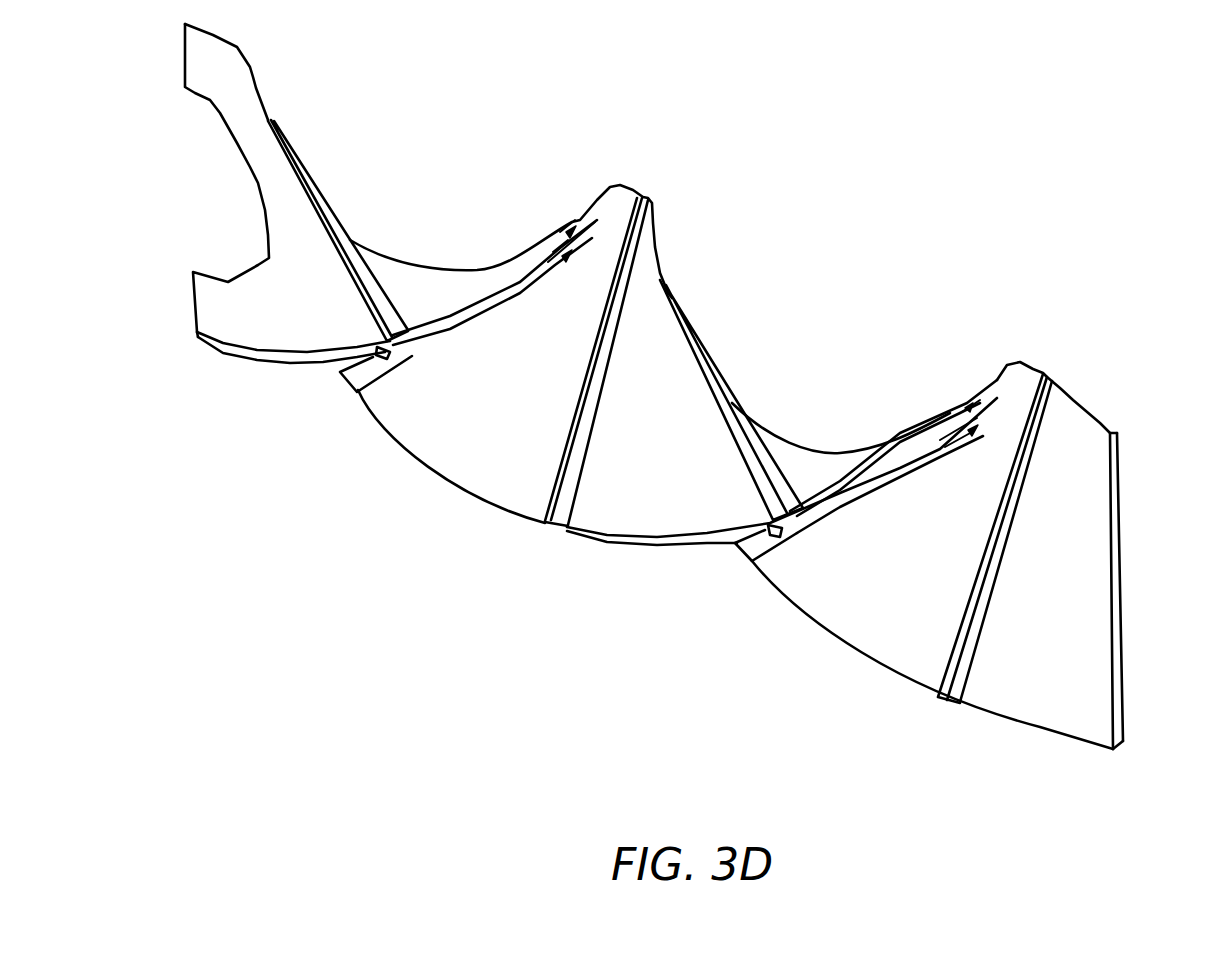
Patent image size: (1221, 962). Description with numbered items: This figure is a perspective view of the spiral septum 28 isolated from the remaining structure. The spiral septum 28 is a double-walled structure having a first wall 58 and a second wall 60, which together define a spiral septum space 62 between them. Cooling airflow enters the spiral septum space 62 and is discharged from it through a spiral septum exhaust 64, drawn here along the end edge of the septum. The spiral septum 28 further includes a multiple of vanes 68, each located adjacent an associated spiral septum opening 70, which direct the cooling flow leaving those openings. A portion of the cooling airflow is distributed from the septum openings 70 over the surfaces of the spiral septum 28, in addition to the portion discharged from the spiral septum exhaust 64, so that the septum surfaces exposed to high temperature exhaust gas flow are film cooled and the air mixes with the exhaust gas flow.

The spiral septum 28 is at (300, 543).
The first wall 58 is at (1088, 735).
The second wall 60 is at (1123, 733).
The spiral septum space 62 is at (553, 232).
The spiral septum exhaust 64 is at (1122, 597).
The vanes 68 is at (368, 268).
The spiral septum openings 70 is at (970, 397).